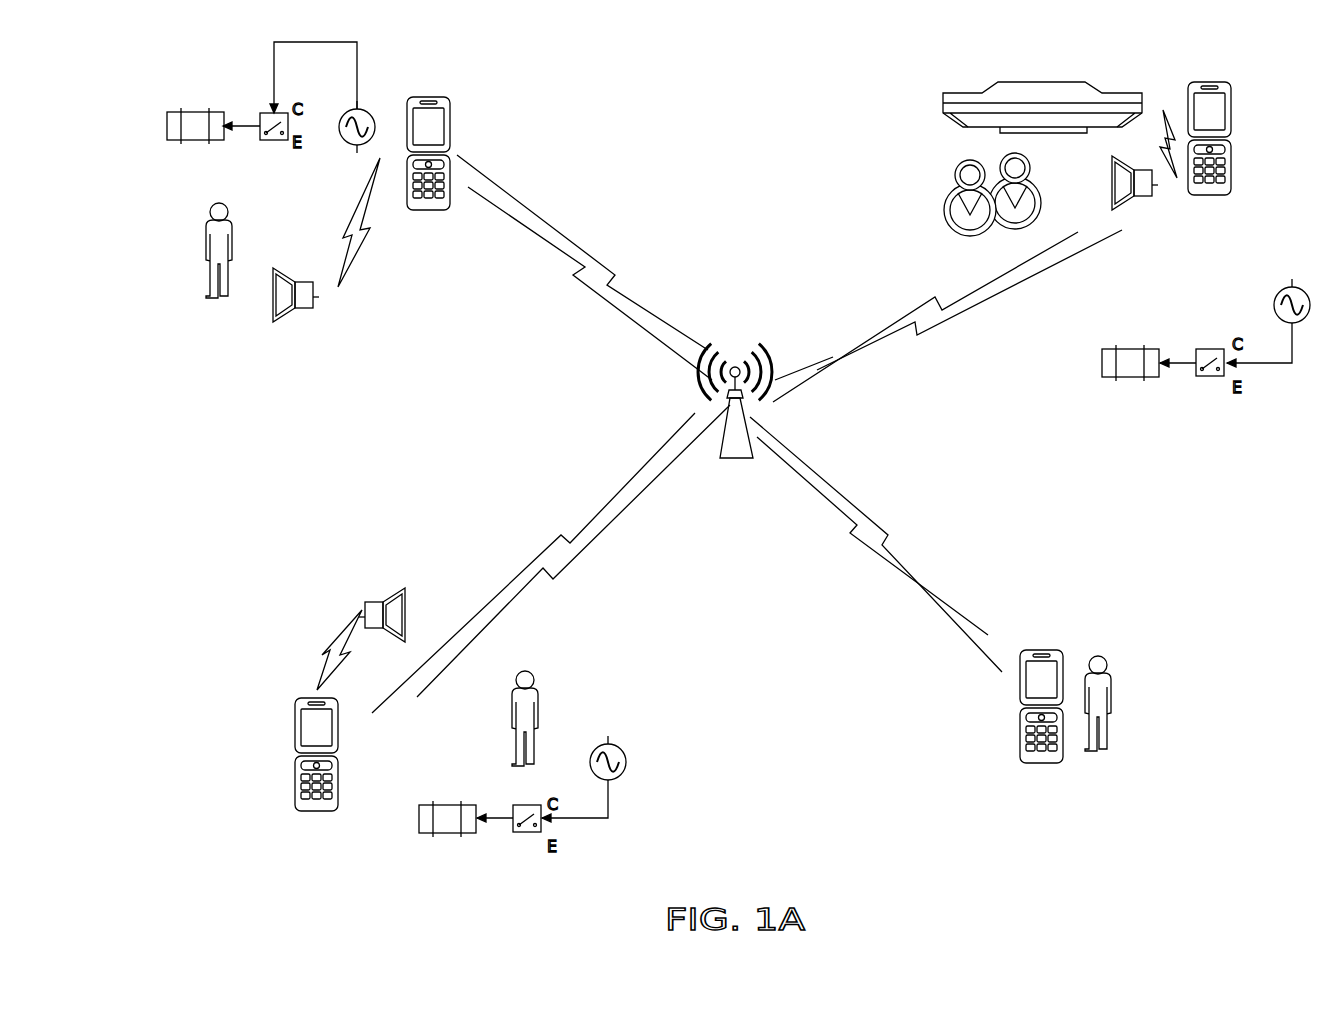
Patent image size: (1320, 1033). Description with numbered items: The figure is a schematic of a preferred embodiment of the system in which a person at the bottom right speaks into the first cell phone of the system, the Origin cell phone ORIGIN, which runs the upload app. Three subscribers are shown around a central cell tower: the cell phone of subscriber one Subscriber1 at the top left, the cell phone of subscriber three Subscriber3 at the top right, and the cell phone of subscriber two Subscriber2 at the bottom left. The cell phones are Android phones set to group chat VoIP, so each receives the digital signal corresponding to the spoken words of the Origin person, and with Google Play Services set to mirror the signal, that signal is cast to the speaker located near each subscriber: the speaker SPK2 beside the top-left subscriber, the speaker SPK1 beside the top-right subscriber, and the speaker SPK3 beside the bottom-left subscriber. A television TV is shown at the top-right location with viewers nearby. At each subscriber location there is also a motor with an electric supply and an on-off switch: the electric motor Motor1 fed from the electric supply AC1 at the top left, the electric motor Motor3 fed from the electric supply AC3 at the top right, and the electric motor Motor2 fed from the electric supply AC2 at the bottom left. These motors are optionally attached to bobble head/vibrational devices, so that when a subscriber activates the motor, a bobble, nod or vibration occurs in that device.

The speaker of subscriber three SPK1 is at (1134, 160).
The speaker of subscriber one SPK2 is at (320, 240).
The speaker of subscriber two SPK3 is at (364, 639).
The television TV is at (1042, 120).
The Origin cell phone ORIGIN is at (1040, 734).
The cell phone of subscriber one Subscriber1 is at (429, 203).
The cell phone of subscriber two Subscriber2 is at (317, 797).
The cell phone of subscriber three Subscriber3 is at (1209, 175).
The electric supply AC1 is at (341, 127).
The electric supply AC2 is at (589, 762).
The electric supply AC3 is at (1272, 305).
The electric motor Motor1 is at (195, 140).
The electric motor Motor2 is at (450, 850).
The electric motor Motor3 is at (1134, 379).